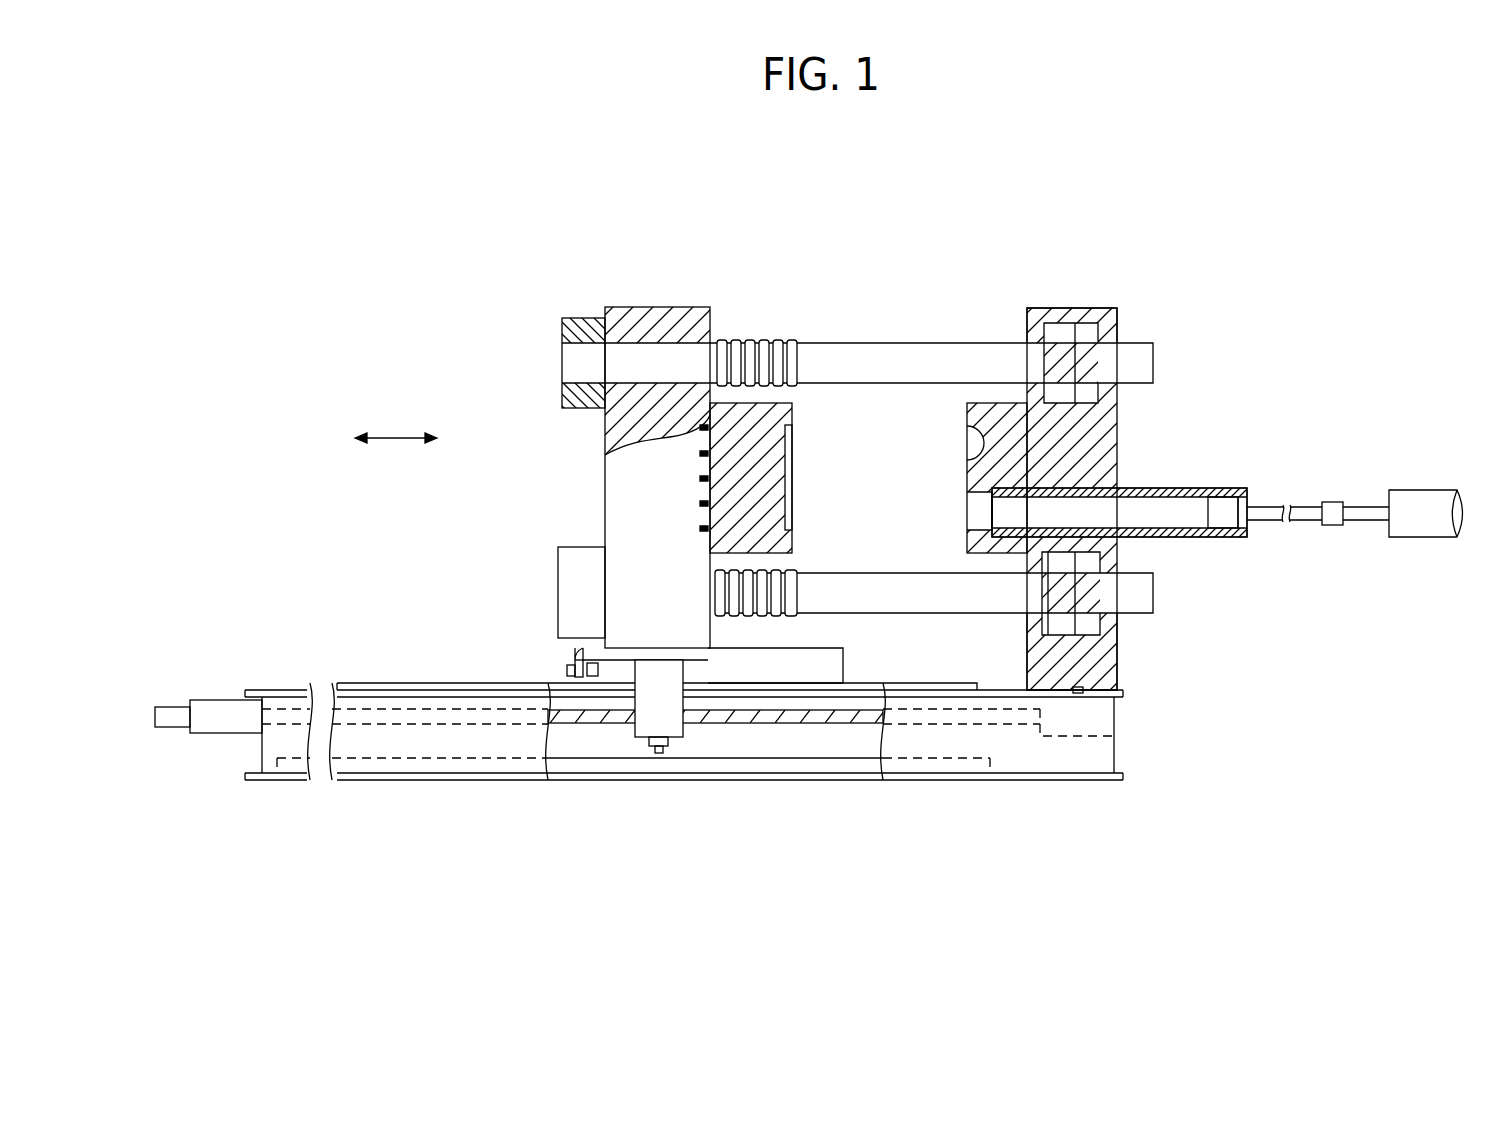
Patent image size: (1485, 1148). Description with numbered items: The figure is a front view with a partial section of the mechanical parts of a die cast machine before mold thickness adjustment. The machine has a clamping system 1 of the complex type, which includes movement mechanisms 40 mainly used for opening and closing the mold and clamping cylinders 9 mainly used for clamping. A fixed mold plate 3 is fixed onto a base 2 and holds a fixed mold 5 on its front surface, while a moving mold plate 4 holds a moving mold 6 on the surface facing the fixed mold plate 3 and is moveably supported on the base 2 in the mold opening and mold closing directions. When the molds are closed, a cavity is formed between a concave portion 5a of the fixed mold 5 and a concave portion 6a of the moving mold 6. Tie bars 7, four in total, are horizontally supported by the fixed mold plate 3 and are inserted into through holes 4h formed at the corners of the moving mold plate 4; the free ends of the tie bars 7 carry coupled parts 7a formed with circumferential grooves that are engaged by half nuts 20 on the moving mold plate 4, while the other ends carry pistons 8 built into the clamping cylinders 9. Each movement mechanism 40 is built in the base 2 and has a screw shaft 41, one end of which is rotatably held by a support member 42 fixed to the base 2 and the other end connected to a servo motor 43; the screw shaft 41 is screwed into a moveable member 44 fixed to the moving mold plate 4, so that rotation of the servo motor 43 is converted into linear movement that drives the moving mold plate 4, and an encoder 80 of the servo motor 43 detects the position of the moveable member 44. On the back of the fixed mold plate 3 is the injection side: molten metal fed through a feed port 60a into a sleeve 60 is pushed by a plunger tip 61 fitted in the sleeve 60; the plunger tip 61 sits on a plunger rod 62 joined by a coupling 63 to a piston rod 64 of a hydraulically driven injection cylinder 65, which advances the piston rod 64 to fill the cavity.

The clamping system 1 is at (1051, 954).
The base 2 is at (1005, 765).
The fixed mold plate 3 is at (1108, 420).
The moving mold plate 4 is at (620, 501).
The through hole 4h is at (657, 360).
The fixed mold 5 is at (1000, 410).
The concave portion 5a is at (967, 440).
The moving mold 6 is at (750, 430).
The concave portion 6a is at (793, 437).
The tie bar 7 is at (893, 357).
The coupled part 7a is at (777, 340).
The piston 8 is at (1060, 335).
The clamping cylinder 9 is at (1090, 320).
The half nut 20 is at (583, 330).
The movement mechanism 40 is at (698, 737).
The screw shaft 41 is at (590, 723).
The support member 42 is at (1097, 722).
The servo motor 43 is at (205, 735).
The moveable member 44 is at (642, 713).
The sleeve 60 is at (1168, 539).
The feed port 60a is at (1197, 488).
The plunger tip 61 is at (1218, 505).
The plunger rod 62 is at (1310, 508).
The coupling 63 is at (1333, 525).
The piston rod 64 is at (1365, 510).
The injection cylinder 65 is at (1430, 527).
The encoder 80 is at (172, 715).